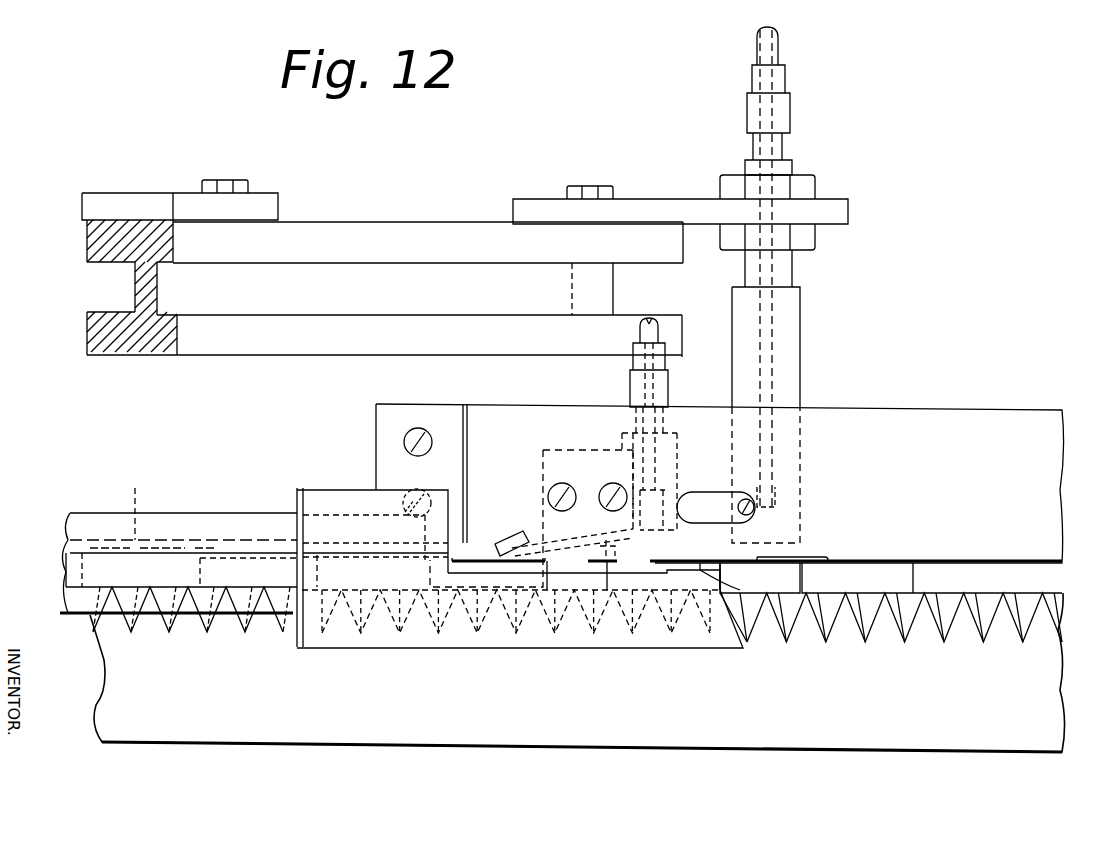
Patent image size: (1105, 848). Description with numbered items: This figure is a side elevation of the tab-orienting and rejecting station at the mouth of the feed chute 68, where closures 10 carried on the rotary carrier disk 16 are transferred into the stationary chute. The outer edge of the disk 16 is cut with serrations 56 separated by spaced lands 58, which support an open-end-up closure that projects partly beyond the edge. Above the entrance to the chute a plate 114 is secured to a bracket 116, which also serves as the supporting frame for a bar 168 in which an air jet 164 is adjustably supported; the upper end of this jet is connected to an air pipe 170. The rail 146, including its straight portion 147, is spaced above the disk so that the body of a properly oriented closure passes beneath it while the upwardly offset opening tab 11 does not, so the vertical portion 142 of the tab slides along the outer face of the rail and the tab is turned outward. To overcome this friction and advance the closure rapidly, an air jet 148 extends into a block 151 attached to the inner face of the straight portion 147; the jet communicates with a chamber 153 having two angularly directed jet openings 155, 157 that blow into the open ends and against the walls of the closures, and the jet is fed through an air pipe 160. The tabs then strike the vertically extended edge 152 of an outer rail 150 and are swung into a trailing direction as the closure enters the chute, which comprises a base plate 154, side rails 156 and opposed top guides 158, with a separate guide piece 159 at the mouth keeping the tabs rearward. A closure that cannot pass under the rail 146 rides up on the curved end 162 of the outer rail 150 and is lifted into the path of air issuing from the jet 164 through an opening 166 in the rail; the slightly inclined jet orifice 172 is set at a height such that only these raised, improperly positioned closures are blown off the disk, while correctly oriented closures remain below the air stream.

The closures 10 is at (931, 584).
The opening tabs 11 is at (340, 552).
The rotary carrier disk 16 is at (1043, 754).
The serrations 56 is at (815, 622).
The lands 58 is at (1045, 602).
The feed chute 68 is at (80, 617).
The plate 114 is at (150, 193).
The bracket 116 is at (357, 225).
The vertical portion 142 is at (660, 563).
The rail 146 is at (933, 409).
The straight portion 147 is at (500, 407).
The air jet 148 is at (662, 479).
The outer rail 150 is at (460, 650).
The block 151 is at (585, 450).
The vertically extended edge 152 is at (452, 508).
The chamber 153 is at (655, 508).
The base plate 154 is at (207, 615).
The jet opening 155 is at (545, 531).
The side rails 156 is at (65, 572).
The jet opening 157 is at (625, 539).
The top guides 158 is at (127, 503).
The guide piece 159 is at (204, 513).
The air pipe 160 is at (658, 332).
The curved end 162 is at (708, 580).
The air jet 164 is at (802, 341).
The opening 166 is at (718, 498).
The bar 168 is at (850, 212).
The air pipe 170 is at (780, 51).
The jet orifice 172 is at (752, 514).